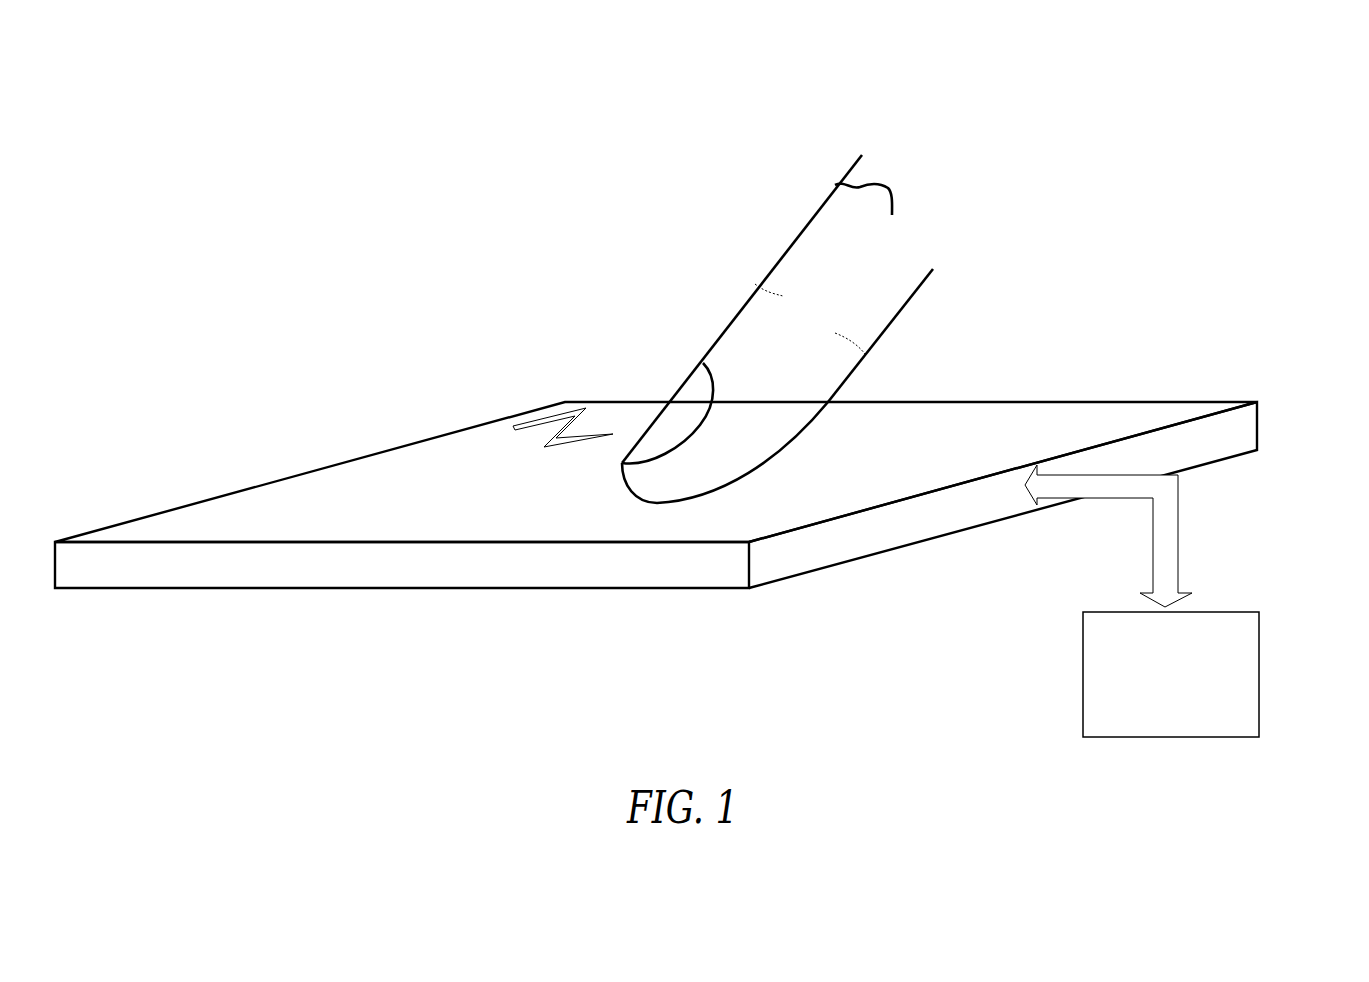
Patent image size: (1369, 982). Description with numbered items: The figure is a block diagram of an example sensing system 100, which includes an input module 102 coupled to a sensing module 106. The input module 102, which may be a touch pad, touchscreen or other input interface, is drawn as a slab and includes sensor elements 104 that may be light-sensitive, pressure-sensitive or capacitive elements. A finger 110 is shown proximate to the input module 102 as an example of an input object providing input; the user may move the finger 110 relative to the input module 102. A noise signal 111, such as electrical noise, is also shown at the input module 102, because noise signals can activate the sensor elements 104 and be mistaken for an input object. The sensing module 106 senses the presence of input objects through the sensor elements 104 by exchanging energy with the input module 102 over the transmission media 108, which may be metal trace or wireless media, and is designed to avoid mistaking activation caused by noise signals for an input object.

The sensing system 100 is at (258, 126).
The input module 102 is at (656, 436).
The sensor elements 104 is at (656, 457).
The sensing module 106 is at (1238, 697).
The transmission media 108 is at (1180, 560).
The finger 110 is at (776, 257).
The noise signal 111 is at (563, 427).